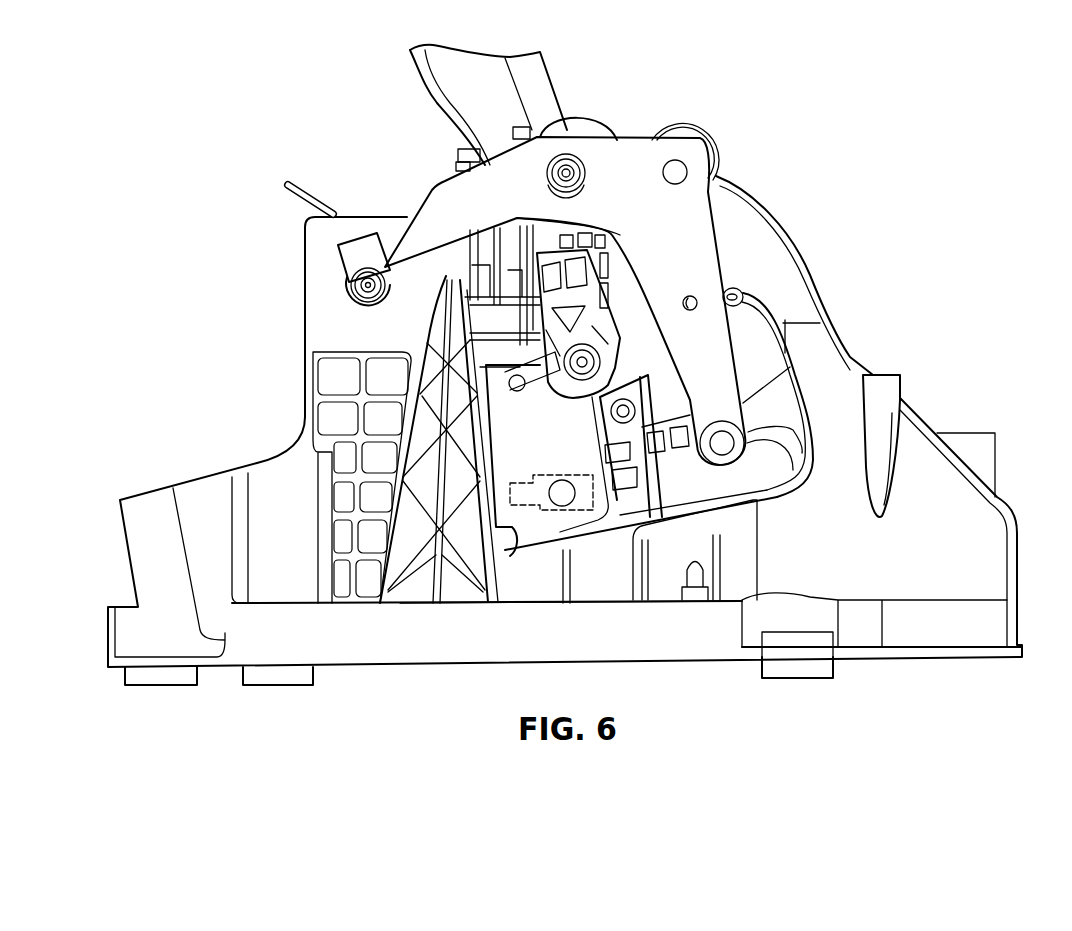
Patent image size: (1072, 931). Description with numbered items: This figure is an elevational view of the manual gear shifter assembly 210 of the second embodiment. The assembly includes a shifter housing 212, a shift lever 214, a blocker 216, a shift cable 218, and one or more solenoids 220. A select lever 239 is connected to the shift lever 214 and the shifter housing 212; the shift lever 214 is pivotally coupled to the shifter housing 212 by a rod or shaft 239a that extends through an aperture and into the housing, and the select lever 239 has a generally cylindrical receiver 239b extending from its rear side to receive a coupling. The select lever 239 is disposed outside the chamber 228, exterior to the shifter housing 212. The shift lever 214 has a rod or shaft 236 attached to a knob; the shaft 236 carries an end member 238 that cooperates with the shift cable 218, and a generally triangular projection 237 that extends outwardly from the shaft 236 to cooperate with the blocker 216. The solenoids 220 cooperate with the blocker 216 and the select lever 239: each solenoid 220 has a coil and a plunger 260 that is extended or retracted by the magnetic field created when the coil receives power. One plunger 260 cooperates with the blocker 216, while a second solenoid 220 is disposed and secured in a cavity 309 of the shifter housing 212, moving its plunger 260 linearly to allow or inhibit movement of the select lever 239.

The manual gear shifter assembly 210 is at (565, 406).
The shifter housing 212 is at (804, 237).
The shift lever 214 is at (559, 90).
The blocker 216 is at (790, 402).
The shift cable 218 is at (537, 510).
The solenoid 220 is at (366, 302).
The chamber 228 is at (507, 470).
The shaft 236 is at (600, 412).
The projection 237 is at (680, 477).
The end member 238 is at (562, 497).
The select lever 239 is at (616, 168).
The shaft 239a is at (680, 168).
The receiver 239b is at (592, 182).
The plunger 260 is at (366, 283).
The cavity 309 is at (385, 275).